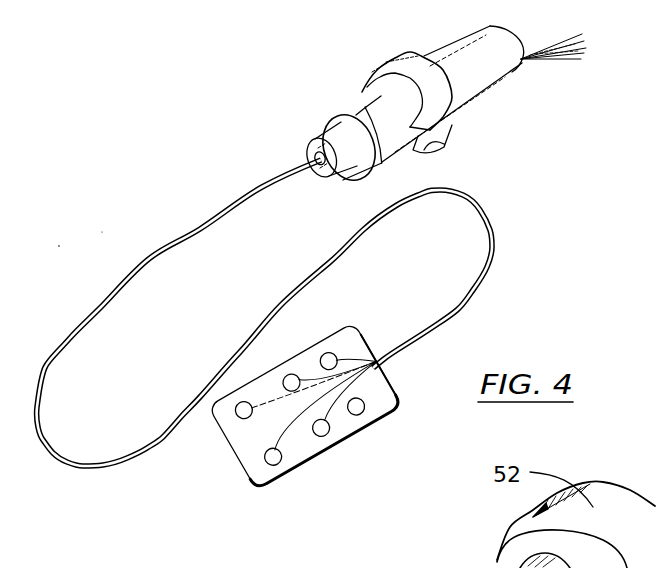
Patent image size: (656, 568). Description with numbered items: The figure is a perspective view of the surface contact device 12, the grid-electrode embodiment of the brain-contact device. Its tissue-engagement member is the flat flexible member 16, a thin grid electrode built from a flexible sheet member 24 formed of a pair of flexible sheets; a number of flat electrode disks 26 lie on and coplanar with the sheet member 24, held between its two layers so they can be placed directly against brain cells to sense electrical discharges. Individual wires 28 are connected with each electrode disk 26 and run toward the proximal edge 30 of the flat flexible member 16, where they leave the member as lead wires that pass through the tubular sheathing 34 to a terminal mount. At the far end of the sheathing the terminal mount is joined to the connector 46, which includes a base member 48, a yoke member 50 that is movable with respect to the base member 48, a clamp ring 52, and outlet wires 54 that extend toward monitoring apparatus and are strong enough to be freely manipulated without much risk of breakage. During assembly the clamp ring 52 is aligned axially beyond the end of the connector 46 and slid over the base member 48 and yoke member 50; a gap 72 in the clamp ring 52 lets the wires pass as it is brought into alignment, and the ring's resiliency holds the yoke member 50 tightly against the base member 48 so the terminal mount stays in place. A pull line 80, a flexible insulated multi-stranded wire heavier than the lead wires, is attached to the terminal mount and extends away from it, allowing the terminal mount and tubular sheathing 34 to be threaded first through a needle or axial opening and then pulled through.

The surface contact device 12 is at (146, 494).
The flat flexible member 16 is at (243, 438).
The flexible sheet member 24 is at (389, 396).
The flat electrode disks 26 is at (361, 412).
The individual wires 28 is at (285, 434).
The proximal edge 30 is at (373, 350).
The tubular sheathing 34 is at (63, 445).
The connector 46 is at (488, 92).
The base member 48 is at (378, 157).
The yoke member 50 is at (477, 57).
The clamp ring 52 is at (383, 65).
The outlet wires 54 is at (560, 58).
The gap 72 is at (453, 127).
The pull line 80 is at (519, 34).